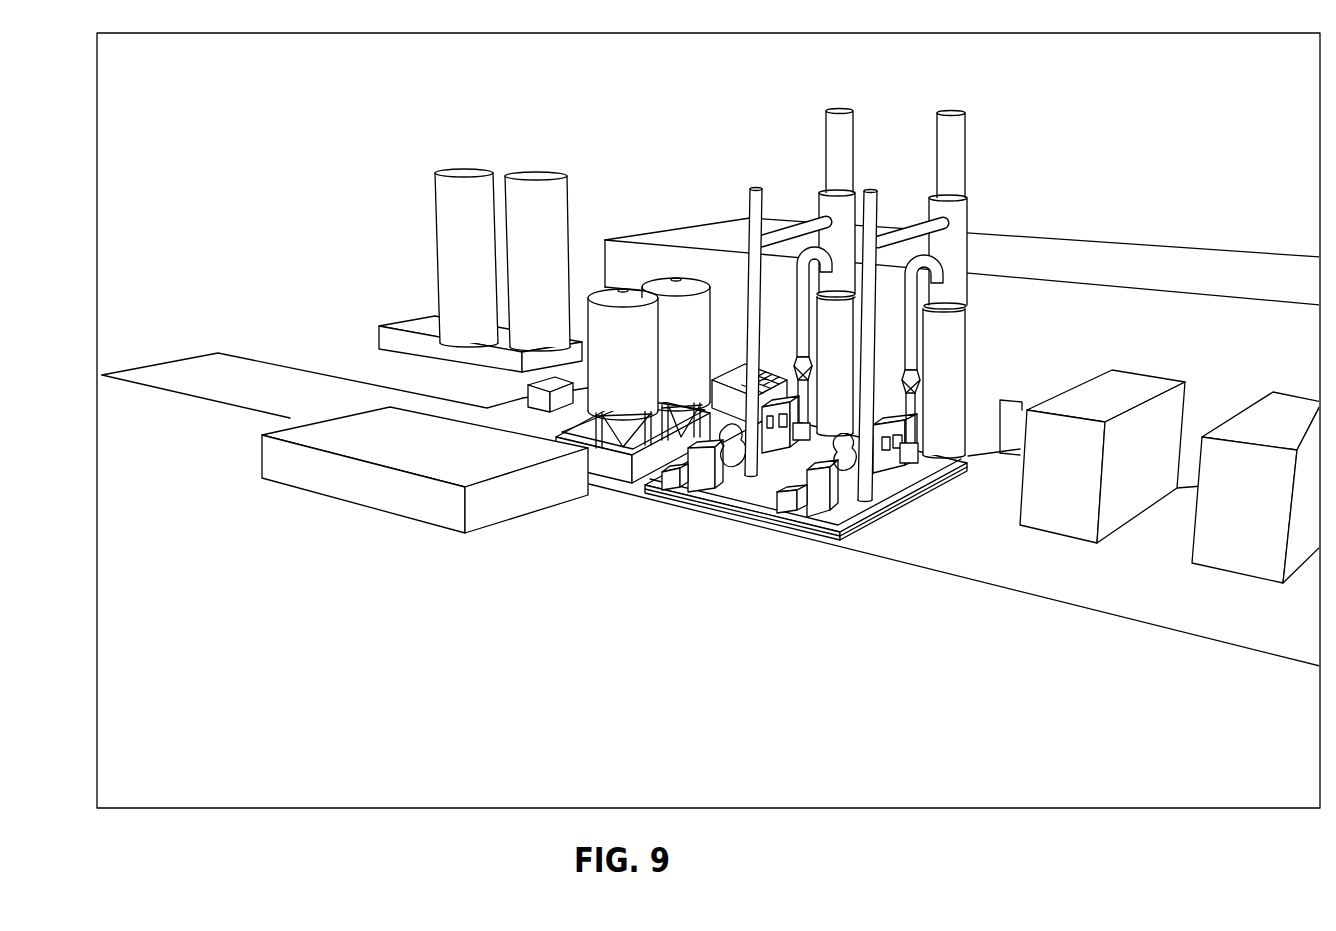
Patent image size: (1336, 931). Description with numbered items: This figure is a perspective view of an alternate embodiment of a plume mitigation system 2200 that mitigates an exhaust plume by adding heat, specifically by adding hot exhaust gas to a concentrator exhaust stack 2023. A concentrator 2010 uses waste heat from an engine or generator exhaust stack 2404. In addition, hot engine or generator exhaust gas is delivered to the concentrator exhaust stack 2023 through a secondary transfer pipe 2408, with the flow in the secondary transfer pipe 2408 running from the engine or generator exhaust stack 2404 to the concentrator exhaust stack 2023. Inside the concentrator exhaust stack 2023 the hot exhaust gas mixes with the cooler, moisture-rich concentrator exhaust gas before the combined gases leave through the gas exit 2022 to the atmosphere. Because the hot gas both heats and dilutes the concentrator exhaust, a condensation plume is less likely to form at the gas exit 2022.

The plume mitigation system 2200 is at (753, 127).
The engine or generator exhaust stack 2404 is at (853, 125).
The secondary transfer pipe 2408 is at (810, 228).
The gas exit 2022 is at (756, 188).
The concentrator exhaust stack 2023 is at (757, 282).
The concentrator 2010 is at (778, 443).